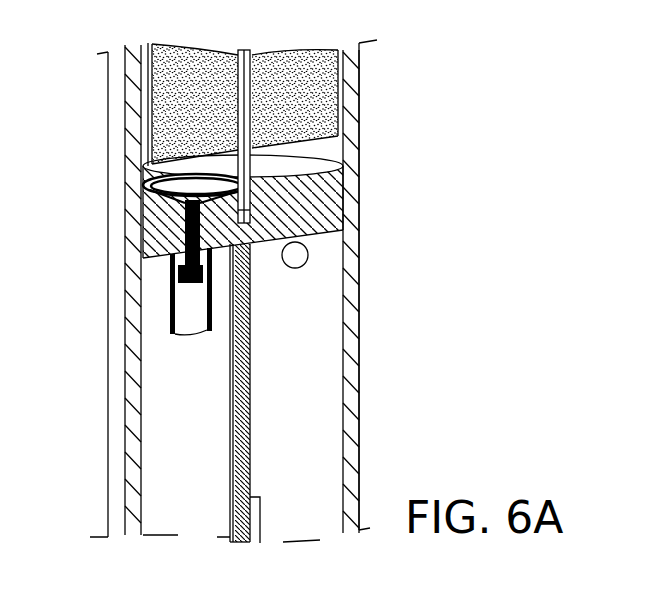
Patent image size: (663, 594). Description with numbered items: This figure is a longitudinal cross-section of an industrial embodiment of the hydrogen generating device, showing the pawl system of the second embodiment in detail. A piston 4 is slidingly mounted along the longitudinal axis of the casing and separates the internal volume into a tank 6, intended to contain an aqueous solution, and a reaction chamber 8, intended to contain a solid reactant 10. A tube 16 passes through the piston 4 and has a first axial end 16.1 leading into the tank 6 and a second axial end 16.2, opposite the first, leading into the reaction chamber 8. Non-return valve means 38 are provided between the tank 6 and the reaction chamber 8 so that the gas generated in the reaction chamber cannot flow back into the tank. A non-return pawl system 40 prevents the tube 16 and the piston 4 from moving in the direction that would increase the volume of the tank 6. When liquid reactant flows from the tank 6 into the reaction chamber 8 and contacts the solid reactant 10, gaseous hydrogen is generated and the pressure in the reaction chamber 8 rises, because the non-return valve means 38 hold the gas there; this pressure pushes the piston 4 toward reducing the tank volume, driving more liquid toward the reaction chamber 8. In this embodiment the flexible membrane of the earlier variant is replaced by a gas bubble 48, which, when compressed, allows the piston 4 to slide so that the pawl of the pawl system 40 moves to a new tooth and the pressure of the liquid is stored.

The piston 4 is at (165, 222).
The tank 6 is at (310, 413).
The reaction chamber 8 is at (337, 148).
The solid reactant 10 is at (305, 105).
The tube 16 is at (235, 98).
The first axial end 16.1 is at (173, 334).
The second axial end 16.2 is at (252, 50).
The non-return valve means 38 is at (160, 244).
The non-return pawl system 40 is at (228, 462).
The gas bubble 48 is at (308, 256).